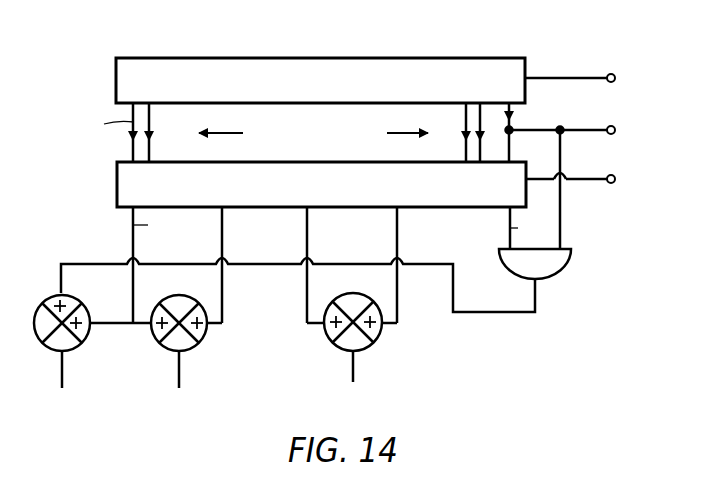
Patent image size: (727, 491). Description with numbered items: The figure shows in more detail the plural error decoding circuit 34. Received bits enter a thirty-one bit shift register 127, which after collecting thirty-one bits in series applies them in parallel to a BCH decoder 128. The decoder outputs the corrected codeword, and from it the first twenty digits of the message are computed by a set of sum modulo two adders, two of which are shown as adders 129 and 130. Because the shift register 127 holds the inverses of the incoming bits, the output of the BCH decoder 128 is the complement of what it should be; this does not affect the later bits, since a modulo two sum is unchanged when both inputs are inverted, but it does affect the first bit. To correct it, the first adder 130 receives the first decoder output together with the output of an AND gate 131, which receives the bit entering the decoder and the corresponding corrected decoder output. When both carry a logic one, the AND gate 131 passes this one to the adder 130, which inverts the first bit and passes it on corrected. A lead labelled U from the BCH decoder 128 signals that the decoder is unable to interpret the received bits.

The plural error decoding circuit 34 is at (348, 214).
The 31 bit shift register 127 is at (525, 70).
The BCH decoder 128 is at (460, 203).
The adder 129 is at (190, 350).
The first adder 130 is at (75, 347).
The AND gate 131 is at (553, 270).